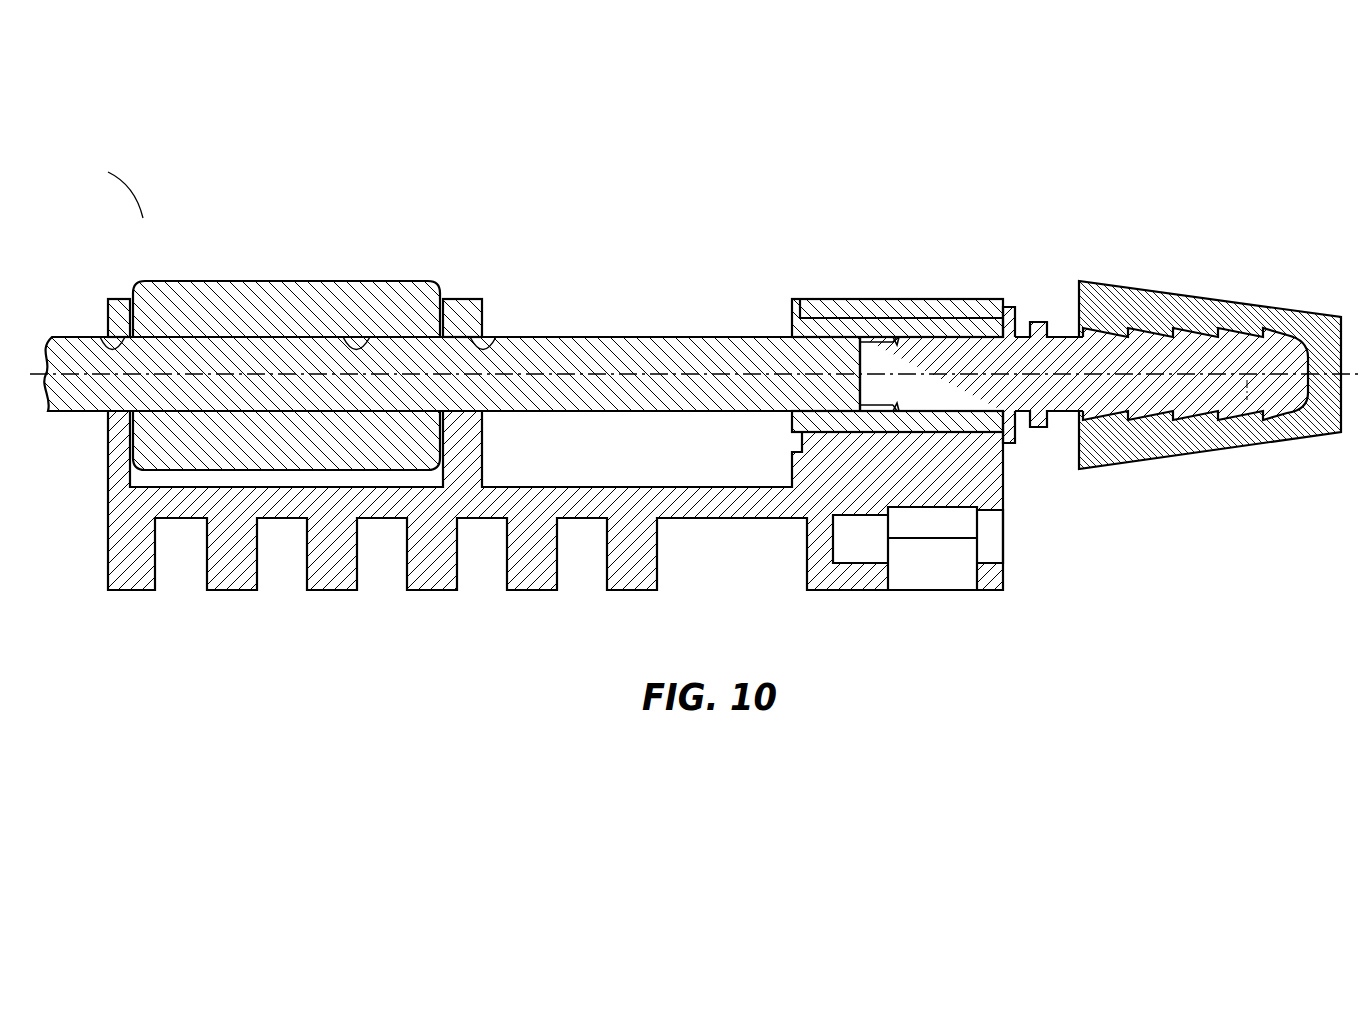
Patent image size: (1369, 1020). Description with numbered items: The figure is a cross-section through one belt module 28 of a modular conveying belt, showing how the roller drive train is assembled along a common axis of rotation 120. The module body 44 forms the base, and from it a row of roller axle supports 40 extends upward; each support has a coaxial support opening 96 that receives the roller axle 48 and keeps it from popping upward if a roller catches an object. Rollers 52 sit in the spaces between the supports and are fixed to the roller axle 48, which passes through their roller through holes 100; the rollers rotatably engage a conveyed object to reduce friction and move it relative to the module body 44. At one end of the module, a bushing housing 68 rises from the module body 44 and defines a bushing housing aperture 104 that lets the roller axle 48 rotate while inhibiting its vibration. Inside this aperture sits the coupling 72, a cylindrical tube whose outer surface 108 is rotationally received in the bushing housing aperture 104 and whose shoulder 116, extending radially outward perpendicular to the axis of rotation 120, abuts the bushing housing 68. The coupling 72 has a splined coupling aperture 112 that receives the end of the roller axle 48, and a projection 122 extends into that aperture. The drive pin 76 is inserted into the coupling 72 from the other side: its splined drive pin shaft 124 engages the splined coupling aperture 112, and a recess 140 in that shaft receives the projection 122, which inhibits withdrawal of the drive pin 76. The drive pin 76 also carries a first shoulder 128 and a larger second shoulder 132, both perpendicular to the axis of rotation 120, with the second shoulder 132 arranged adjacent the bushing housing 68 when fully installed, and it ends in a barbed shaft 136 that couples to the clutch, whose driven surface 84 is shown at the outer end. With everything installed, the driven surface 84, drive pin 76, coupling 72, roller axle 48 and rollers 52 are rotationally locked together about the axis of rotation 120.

The belt module 28 is at (143, 222).
The roller axle support 40 is at (120, 299).
The module body 44 is at (690, 505).
The roller axle 48 is at (622, 360).
The roller 52 is at (283, 300).
The bushing housing 68 is at (932, 305).
The coupling 72 is at (790, 335).
The drive pin 76 is at (1090, 359).
The driven surface 84 is at (1320, 330).
The coaxial support opening 96 is at (110, 348).
The roller through hole 100 is at (366, 340).
The bushing housing aperture 104 is at (838, 333).
The outer surface 108 is at (973, 432).
The splined coupling aperture 112 is at (825, 393).
The shoulder 116 is at (797, 300).
The axis of rotation 120 is at (1247, 380).
The projection 122 is at (898, 337).
The drive pin shaft 124 is at (957, 352).
The first shoulder 128 is at (1042, 428).
The second shoulder 132 is at (1010, 445).
The barbed shaft 136 is at (1158, 328).
The recess 140 is at (894, 402).